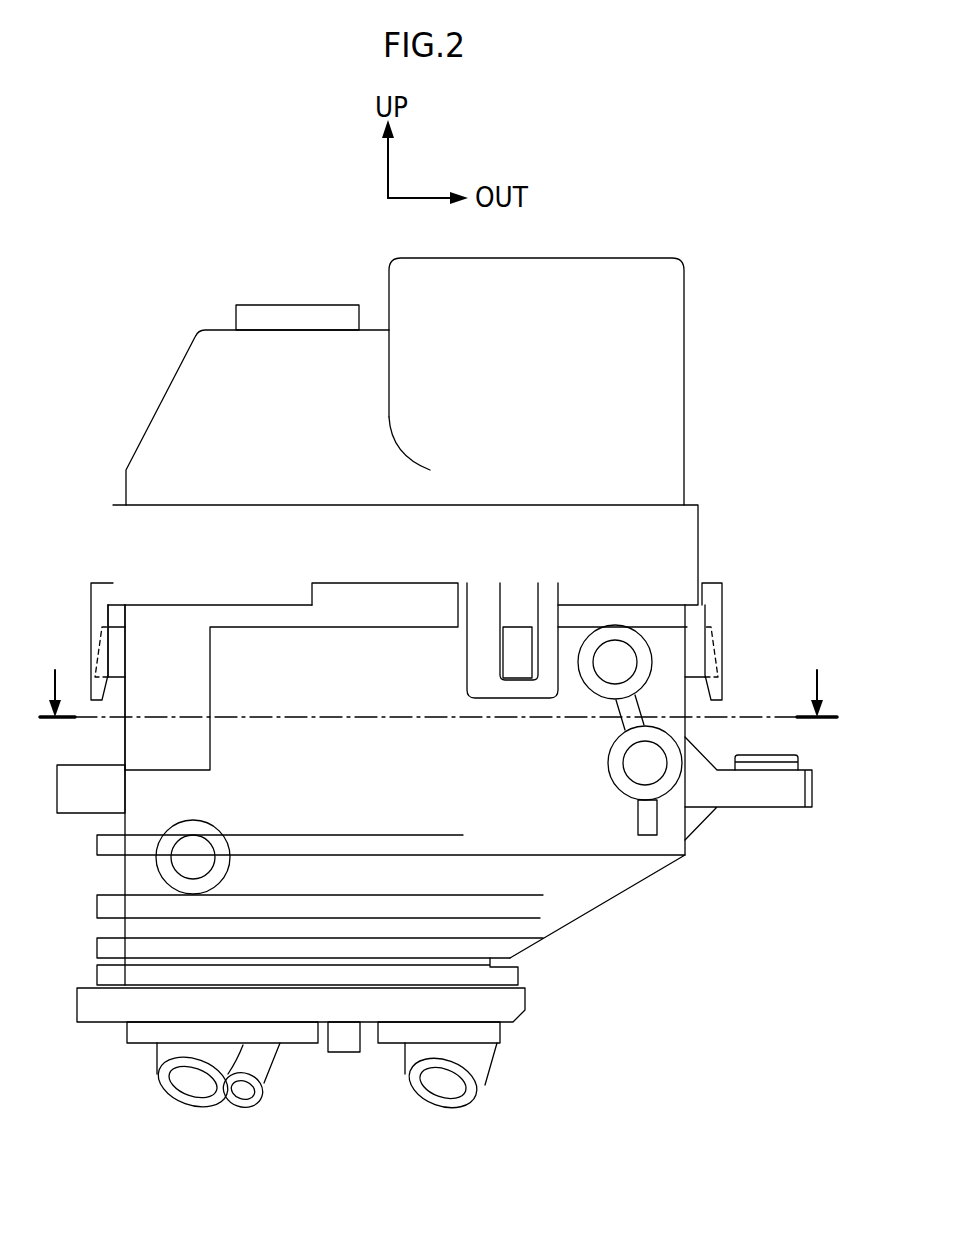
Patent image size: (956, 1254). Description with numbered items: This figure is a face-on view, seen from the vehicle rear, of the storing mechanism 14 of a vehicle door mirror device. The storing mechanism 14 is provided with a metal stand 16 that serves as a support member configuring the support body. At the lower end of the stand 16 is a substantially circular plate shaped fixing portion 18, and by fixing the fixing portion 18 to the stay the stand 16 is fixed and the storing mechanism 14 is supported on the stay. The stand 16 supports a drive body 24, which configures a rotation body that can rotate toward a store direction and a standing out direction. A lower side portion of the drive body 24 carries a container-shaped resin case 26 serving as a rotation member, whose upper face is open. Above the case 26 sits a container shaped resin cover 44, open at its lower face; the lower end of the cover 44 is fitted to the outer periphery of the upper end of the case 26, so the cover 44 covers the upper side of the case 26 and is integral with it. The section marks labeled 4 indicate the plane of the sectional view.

The storing mechanism 14 is at (131, 242).
The drive body 24 is at (153, 394).
The cover 44 is at (684, 362).
The case 26 is at (125, 746).
The fixing portion 18 is at (525, 992).
The stand 16 is at (368, 1003).
The section line 4- 4 is at (438, 675).